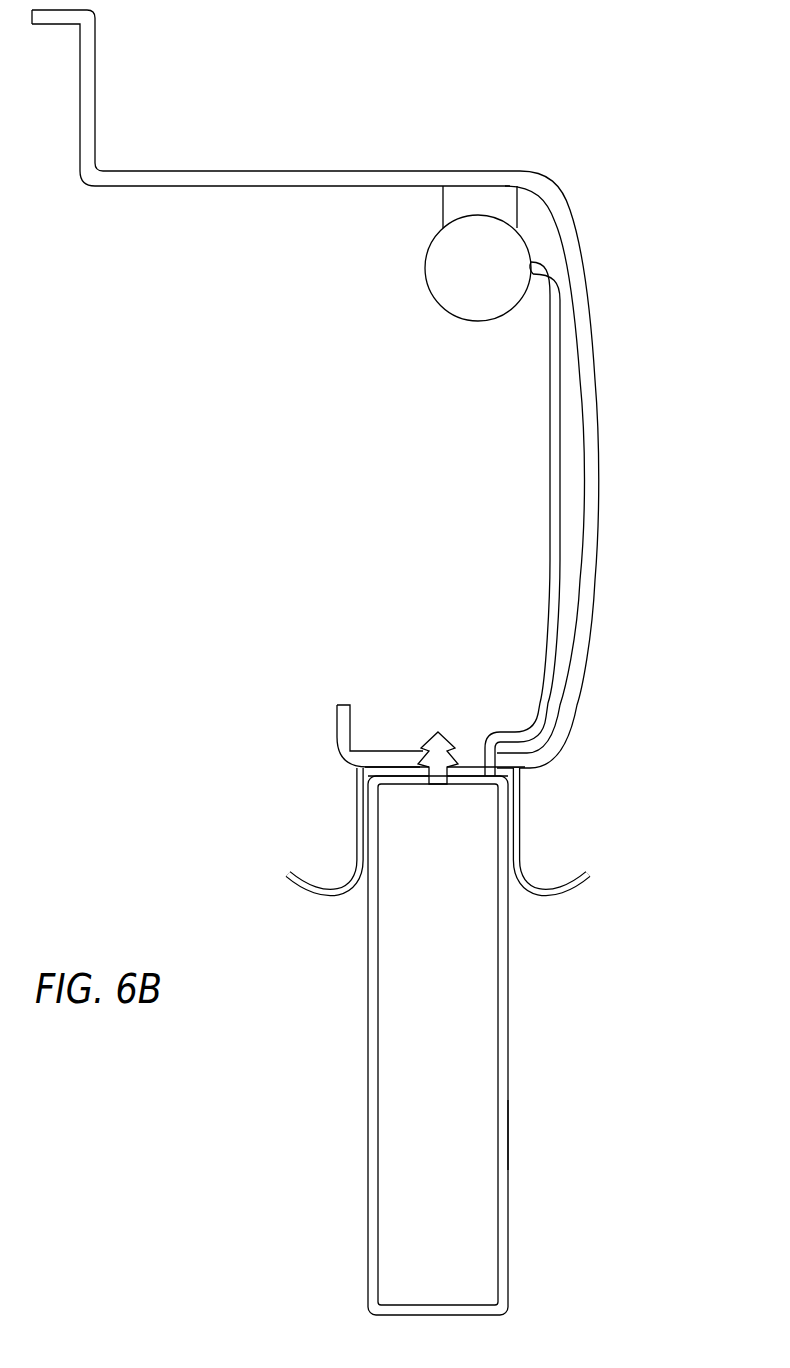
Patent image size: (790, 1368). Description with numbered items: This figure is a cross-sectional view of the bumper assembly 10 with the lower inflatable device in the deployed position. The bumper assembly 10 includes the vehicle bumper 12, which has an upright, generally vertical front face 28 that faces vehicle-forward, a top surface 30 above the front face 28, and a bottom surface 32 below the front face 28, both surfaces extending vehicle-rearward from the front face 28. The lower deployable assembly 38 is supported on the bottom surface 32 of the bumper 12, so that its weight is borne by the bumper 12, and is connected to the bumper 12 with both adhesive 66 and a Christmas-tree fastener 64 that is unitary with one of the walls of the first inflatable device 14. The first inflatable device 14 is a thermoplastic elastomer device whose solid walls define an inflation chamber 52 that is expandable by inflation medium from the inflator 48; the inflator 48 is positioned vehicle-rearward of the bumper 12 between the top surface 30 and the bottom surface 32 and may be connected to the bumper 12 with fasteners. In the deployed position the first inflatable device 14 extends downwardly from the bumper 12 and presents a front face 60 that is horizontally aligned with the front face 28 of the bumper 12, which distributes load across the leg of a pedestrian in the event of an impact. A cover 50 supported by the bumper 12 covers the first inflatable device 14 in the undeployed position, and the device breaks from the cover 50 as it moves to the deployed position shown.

The bumper assembly 10 is at (368, 662).
The vehicle bumper 12 is at (579, 473).
The first inflatable device 14 is at (482, 1045).
The front face 28 is at (596, 380).
The top surface 30 is at (487, 170).
The bottom surface 32 is at (342, 782).
The lower deployable assembly 38 is at (520, 1137).
The inflator 48 is at (478, 322).
The cover 50 is at (590, 893).
The inflation chamber 52 is at (458, 973).
The front face 60 is at (508, 1218).
The fastener 64 is at (437, 730).
The adhesive 66 is at (386, 770).